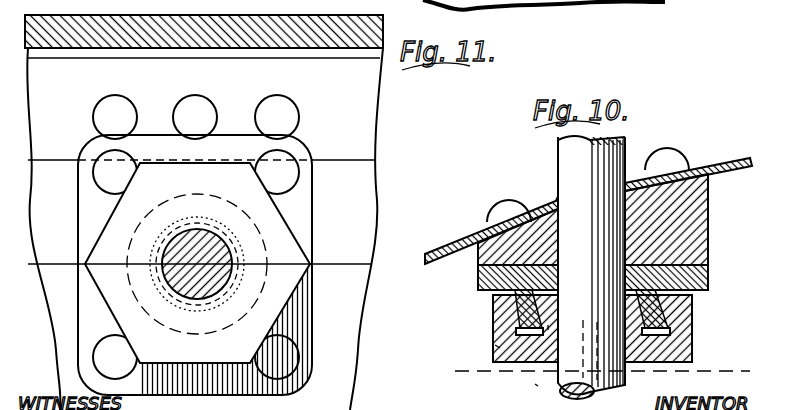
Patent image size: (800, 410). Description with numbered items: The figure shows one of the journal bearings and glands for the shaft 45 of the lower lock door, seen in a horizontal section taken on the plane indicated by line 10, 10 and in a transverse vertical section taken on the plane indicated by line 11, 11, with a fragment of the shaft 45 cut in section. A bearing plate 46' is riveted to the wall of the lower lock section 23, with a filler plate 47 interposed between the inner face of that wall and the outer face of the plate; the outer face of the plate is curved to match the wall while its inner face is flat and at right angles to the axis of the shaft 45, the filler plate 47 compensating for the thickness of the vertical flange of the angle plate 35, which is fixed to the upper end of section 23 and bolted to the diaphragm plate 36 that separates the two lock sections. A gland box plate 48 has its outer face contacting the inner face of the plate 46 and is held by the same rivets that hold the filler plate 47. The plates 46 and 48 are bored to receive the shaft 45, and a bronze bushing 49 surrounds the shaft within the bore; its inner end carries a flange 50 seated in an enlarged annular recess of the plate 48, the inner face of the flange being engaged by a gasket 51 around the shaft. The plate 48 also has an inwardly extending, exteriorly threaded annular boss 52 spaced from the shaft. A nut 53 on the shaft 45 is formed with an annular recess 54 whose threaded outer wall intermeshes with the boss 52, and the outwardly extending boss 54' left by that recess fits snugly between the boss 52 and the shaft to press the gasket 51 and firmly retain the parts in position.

In FIG. 11, the section line 10 is at (384, 270).
In FIG. 10, the section line 11 is at (757, 366).
In FIG. 10, the lower lock section 23 is at (706, 178).
In FIG. 11, the angle plate 35 is at (362, 113).
In FIG. 11, the diaphragm plate 36 is at (341, 50).
In FIG. 11, the shaft 45 is at (178, 270).
In FIG. 10, the shaft 45 is at (571, 182).
In FIG. 10, the bearing plate 46 is at (502, 256).
In FIG. 10, the bearing plate 46' is at (687, 219).
In FIG. 10, the filler plate 47 is at (498, 240).
In FIG. 11, the gland box plate 48 is at (302, 330).
In FIG. 10, the gland box plate 48 is at (708, 280).
In FIG. 10, the bronze bushing 49 is at (556, 200).
In FIG. 10, the flange 50 is at (676, 294).
In FIG. 10, the gasket 51 is at (668, 318).
In FIG. 10, the annular boss 52 is at (500, 330).
In FIG. 11, the nut 53 is at (282, 244).
In FIG. 10, the nut 53 is at (497, 346).
In FIG. 10, the annular recess 54 is at (528, 362).
In FIG. 10, the outwardly extending boss 54' is at (547, 397).